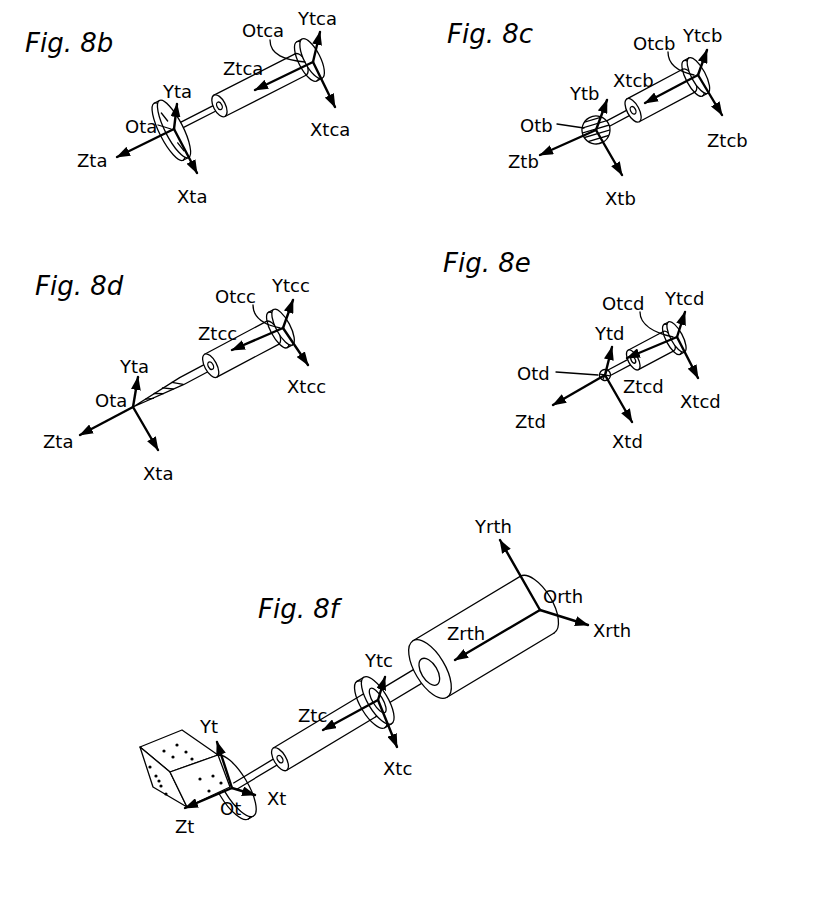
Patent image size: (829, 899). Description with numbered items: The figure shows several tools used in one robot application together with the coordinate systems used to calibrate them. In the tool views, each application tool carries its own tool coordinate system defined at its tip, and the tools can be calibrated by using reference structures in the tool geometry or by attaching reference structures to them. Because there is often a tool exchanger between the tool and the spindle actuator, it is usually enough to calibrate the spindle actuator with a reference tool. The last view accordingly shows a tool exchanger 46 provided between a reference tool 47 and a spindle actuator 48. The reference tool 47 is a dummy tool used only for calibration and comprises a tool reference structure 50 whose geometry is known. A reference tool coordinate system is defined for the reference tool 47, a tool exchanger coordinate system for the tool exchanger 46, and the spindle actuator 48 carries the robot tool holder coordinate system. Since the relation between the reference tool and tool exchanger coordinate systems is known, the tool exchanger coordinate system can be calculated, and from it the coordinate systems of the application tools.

The tool exchanger 46 is at (398, 722).
The reference tool 47 is at (248, 818).
The spindle actuator 48 is at (502, 662).
The tool reference structure 50 is at (152, 739).